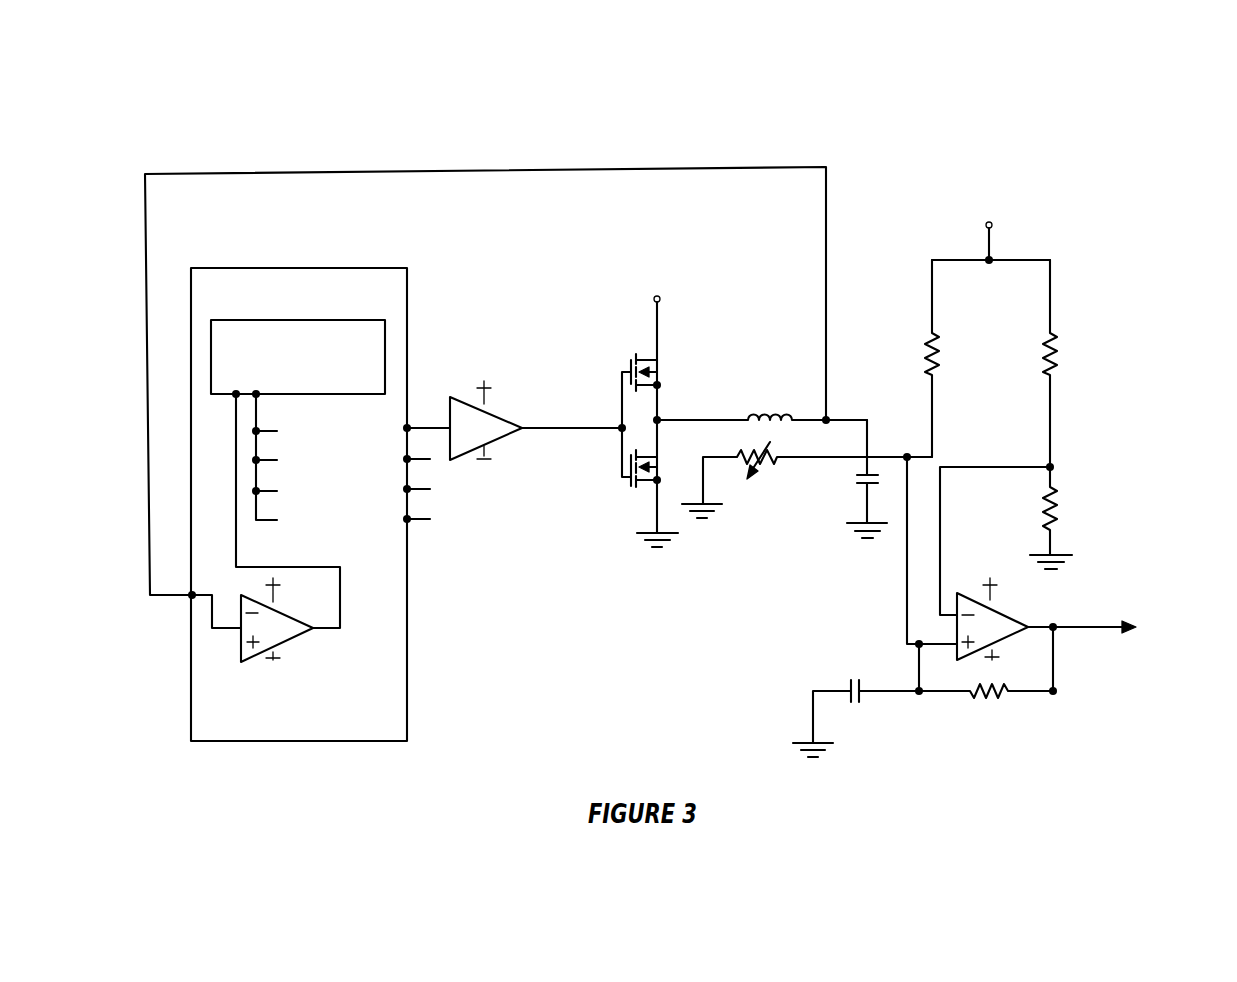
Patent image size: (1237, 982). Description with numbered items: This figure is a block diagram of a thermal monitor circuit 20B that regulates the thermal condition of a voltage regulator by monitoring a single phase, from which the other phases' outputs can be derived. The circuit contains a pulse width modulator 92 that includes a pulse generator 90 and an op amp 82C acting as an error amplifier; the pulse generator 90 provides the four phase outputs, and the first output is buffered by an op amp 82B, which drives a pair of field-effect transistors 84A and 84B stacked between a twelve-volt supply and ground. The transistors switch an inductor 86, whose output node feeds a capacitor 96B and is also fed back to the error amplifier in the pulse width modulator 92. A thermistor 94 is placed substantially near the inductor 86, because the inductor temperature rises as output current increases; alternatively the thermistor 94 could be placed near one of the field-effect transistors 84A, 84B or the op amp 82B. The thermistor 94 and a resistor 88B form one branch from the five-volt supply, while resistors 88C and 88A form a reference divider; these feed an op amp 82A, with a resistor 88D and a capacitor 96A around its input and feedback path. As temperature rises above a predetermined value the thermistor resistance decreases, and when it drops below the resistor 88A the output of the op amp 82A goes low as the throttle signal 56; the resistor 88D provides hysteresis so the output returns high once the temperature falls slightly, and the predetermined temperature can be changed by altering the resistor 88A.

The thermal monitor circuit 20B is at (307, 92).
The pulse width modulator 92 is at (358, 268).
The pulse generator 90 is at (338, 320).
The op amp 82C is at (299, 636).
The op amp 82B is at (494, 442).
The field-effect transistor 84A is at (660, 373).
The field-effect transistor 84B is at (667, 483).
The inductor 86 is at (760, 404).
The thermistor 94 is at (807, 472).
The capacitor 96B is at (851, 479).
The resistor 88B is at (987, 328).
The resistor 88C is at (1024, 437).
The resistor 88A is at (1069, 518).
The op amp 82A is at (1021, 632).
The resistor 88D is at (984, 708).
The capacitor 96A is at (856, 718).
The throttle signal 56 is at (1141, 627).